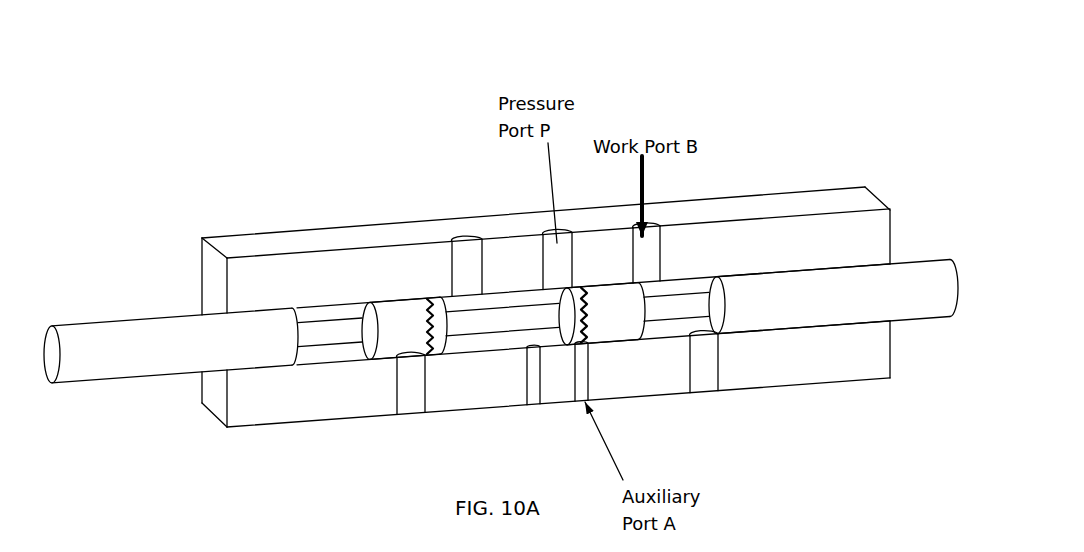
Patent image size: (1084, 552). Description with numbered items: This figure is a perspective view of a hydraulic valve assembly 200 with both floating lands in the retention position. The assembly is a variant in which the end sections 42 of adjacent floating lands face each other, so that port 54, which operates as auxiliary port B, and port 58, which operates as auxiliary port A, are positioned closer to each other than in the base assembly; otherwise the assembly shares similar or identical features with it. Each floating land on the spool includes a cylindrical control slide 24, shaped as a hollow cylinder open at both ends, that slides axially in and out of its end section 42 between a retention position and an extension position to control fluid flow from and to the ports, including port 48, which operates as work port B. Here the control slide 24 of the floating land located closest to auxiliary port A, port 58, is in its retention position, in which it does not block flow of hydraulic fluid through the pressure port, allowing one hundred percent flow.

The hydraulic valve assembly 200 is at (767, 80).
The control slide 24 is at (602, 323).
The end section 42 is at (437, 300).
The port 48 is at (652, 233).
The port 54 is at (538, 390).
The port 58 is at (588, 388).